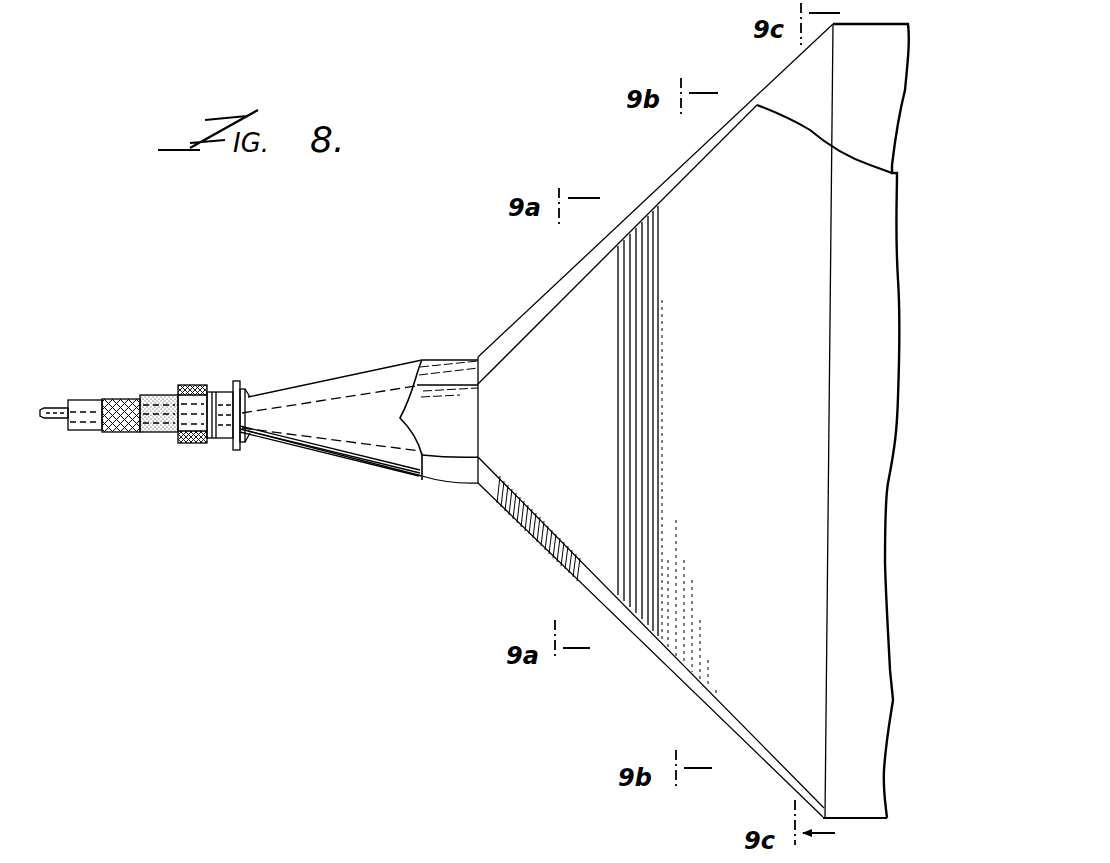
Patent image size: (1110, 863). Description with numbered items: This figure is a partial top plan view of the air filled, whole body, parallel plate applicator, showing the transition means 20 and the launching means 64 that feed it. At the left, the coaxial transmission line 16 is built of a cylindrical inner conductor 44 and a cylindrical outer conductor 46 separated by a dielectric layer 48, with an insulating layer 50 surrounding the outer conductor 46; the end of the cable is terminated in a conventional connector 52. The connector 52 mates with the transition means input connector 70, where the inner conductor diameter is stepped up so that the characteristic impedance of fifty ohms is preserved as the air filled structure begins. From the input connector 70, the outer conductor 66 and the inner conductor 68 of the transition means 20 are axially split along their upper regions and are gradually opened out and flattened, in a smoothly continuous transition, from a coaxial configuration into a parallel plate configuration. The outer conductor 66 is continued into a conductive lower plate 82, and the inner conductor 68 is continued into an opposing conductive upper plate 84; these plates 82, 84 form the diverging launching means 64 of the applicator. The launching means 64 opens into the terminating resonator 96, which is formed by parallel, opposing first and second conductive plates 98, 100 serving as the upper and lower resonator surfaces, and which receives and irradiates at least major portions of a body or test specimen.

The transmission line 16 is at (109, 419).
The transition means 20 is at (536, 420).
The inner conductor 44 is at (122, 399).
The outer conductor 46 is at (50, 420).
The dielectric layer 48 is at (85, 400).
The insulating layer 50 is at (161, 395).
The connector 52 is at (195, 443).
The launching means 64 is at (632, 676).
The outer conductor 66 is at (392, 353).
The inner conductor 68 is at (424, 480).
The transition means input connector 70 is at (235, 381).
The lower plate 82 is at (532, 311).
The upper plate 84 is at (596, 279).
The resonator 96 is at (866, 830).
The first conductive plate 98 is at (890, 219).
The second conductive plate 100 is at (887, 108).